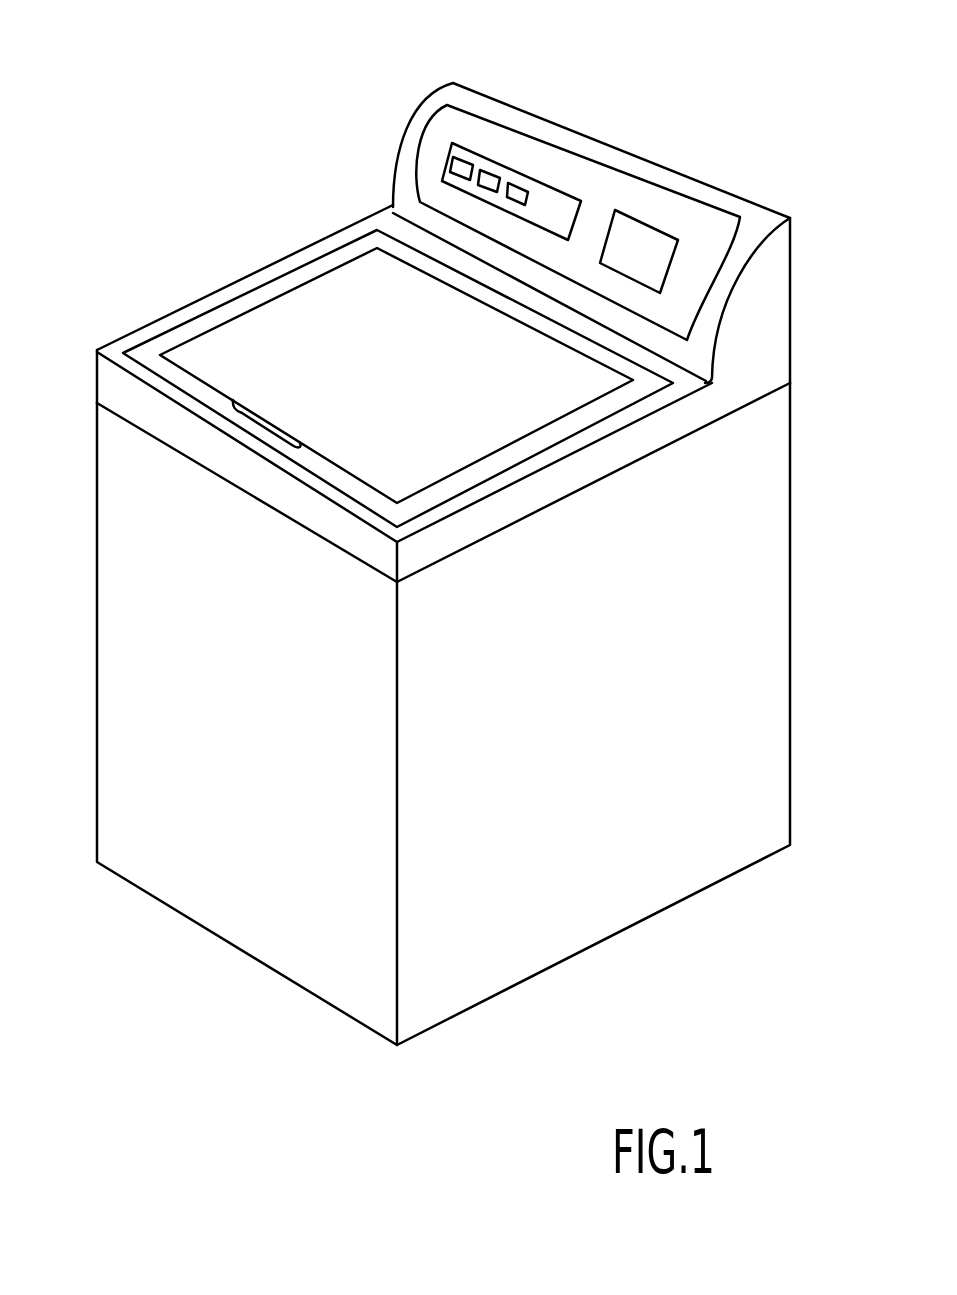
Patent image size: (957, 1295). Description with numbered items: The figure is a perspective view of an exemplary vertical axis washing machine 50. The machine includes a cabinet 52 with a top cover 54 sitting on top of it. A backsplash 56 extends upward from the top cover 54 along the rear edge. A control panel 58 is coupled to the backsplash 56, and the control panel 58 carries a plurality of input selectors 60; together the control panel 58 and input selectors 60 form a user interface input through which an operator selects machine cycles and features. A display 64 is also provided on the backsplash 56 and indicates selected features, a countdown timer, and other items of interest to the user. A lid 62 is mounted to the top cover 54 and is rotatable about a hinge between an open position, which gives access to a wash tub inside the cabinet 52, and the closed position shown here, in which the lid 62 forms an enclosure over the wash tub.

The vertical axis washing machine 50 is at (662, 100).
The cabinet 52 is at (770, 573).
The top cover 54 is at (110, 387).
The backsplash 56 is at (748, 305).
The control panel 58 is at (557, 200).
The input selectors 60 is at (465, 167).
The lid 62 is at (260, 330).
The display 64 is at (652, 240).